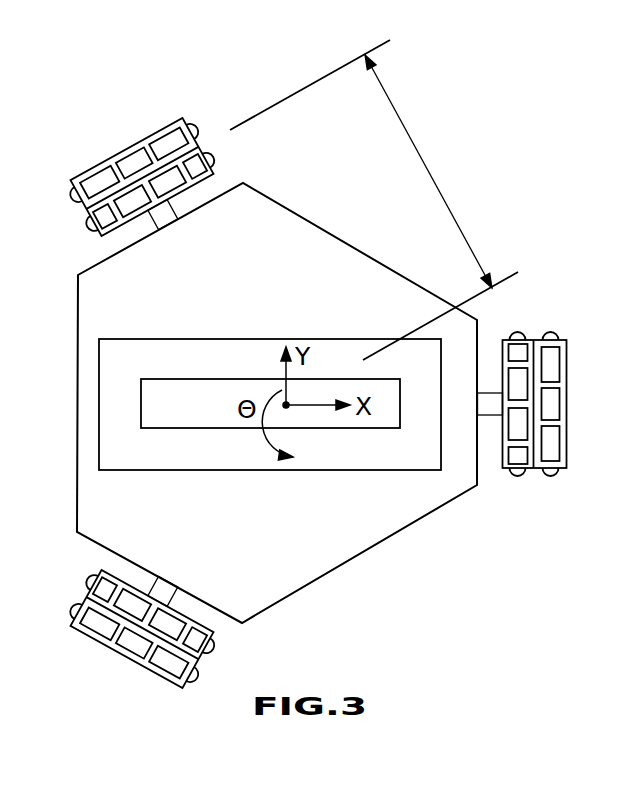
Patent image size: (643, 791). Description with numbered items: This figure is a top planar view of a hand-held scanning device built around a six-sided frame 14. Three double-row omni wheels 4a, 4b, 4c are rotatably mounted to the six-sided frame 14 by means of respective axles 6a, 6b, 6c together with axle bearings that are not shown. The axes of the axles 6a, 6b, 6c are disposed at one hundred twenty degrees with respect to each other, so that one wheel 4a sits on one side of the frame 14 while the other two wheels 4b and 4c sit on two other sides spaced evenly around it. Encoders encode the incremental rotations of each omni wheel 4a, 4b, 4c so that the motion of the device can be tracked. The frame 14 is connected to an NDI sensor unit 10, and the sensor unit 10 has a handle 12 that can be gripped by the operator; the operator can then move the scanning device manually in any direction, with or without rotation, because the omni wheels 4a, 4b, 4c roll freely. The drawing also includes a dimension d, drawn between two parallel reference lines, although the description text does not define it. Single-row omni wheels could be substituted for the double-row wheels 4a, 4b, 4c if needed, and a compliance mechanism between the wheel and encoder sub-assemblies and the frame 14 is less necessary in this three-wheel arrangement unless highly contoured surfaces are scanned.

The double-row omni wheel 4a is at (567, 400).
The double-row omni wheel 4b is at (127, 150).
The double-row omni wheel 4c is at (123, 655).
The axle 6a is at (478, 415).
The axle 6b is at (180, 212).
The axle 6c is at (157, 585).
The NDI sensor unit 10 is at (385, 338).
The handle 12 is at (242, 379).
The six-sided frame 14 is at (332, 230).
The distance d is at (425, 162).